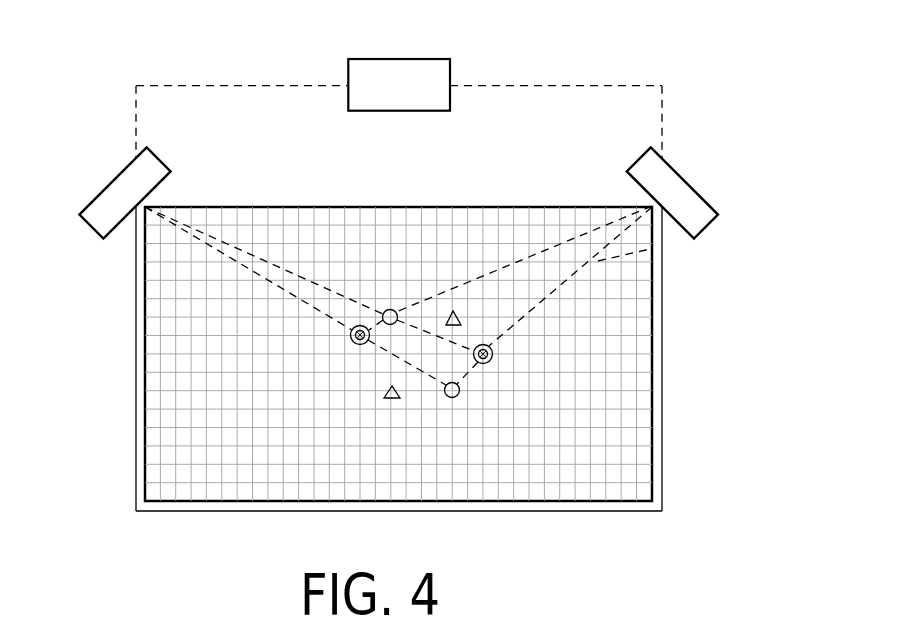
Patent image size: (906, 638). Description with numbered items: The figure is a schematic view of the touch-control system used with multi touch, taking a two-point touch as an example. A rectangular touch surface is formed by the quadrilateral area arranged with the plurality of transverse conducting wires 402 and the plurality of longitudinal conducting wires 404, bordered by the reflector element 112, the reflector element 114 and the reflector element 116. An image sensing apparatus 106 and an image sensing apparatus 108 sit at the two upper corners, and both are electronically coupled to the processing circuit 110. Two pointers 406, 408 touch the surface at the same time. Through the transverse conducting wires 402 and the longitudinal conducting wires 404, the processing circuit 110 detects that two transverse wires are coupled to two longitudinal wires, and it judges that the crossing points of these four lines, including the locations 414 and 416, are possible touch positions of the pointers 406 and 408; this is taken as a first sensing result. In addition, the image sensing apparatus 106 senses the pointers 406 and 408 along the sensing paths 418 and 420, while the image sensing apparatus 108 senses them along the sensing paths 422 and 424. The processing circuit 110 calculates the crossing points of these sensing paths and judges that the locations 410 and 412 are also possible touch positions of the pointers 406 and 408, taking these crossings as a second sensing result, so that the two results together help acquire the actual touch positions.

The processing circuit 110 is at (398, 59).
The image sensing apparatus 106 is at (88, 233).
The image sensing apparatus 108 is at (705, 228).
The reflector element 112 is at (137, 354).
The reflector element 116 is at (662, 388).
The reflector element 114 is at (167, 505).
The plurality of transverse conducting wires 402 is at (630, 462).
The plurality of longitudinal conducting wires 404 is at (622, 440).
The sensing path 418 is at (254, 258).
The sensing path 420 is at (308, 284).
The sensing path 422 is at (509, 263).
The sensing path 424 is at (655, 251).
The possible touch position 410 is at (363, 325).
The possible touch position 412 is at (483, 364).
The pointer 406 is at (391, 309).
The pointer 408 is at (451, 398).
The possible touch position 414 is at (453, 311).
The possible touch position 416 is at (392, 398).